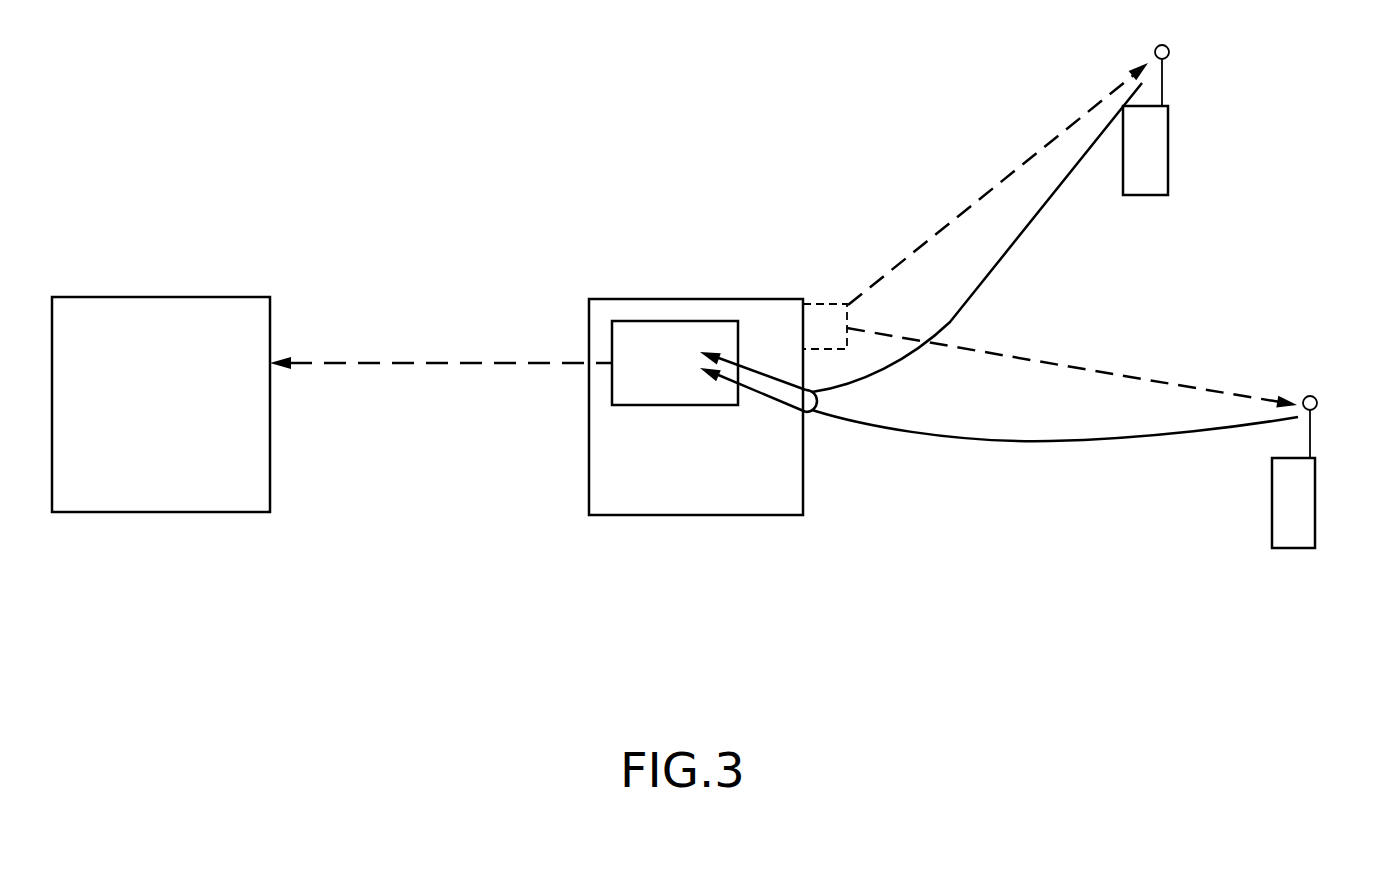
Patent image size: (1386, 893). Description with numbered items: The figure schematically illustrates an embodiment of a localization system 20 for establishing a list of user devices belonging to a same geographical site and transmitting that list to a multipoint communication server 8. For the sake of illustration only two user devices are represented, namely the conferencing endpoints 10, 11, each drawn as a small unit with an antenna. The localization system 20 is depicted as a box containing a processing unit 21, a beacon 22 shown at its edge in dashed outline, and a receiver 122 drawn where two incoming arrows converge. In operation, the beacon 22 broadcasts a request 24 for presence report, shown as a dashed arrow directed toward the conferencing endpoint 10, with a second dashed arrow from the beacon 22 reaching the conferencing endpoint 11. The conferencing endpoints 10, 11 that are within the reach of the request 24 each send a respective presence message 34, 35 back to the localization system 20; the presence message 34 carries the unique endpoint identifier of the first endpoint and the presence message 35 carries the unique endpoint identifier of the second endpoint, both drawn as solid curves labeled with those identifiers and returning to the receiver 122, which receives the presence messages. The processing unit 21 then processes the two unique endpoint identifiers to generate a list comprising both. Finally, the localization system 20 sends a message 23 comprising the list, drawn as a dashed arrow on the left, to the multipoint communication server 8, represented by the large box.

The multipoint communication server 8 is at (203, 512).
The conferencing endpoint 10 is at (1168, 152).
The conferencing endpoint 11 is at (1315, 507).
The localization system 20 is at (697, 515).
The processing unit 21 is at (677, 321).
The beacon 22 is at (818, 304).
The message 23 is at (442, 363).
The request for presence report 24 is at (1007, 177).
The presence message 34 is at (1040, 230).
The presence message 35 is at (1047, 442).
The receiver 122 is at (810, 413).